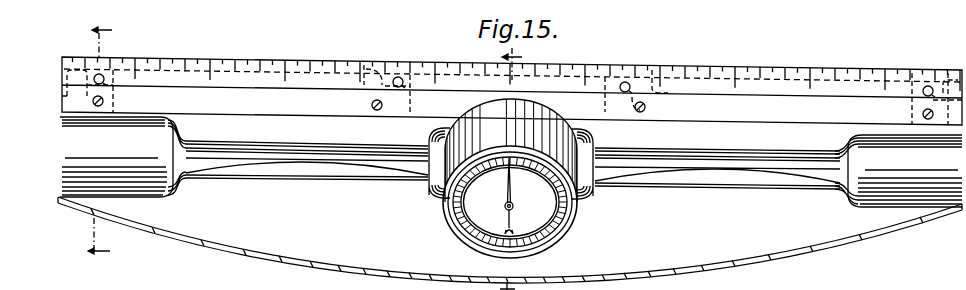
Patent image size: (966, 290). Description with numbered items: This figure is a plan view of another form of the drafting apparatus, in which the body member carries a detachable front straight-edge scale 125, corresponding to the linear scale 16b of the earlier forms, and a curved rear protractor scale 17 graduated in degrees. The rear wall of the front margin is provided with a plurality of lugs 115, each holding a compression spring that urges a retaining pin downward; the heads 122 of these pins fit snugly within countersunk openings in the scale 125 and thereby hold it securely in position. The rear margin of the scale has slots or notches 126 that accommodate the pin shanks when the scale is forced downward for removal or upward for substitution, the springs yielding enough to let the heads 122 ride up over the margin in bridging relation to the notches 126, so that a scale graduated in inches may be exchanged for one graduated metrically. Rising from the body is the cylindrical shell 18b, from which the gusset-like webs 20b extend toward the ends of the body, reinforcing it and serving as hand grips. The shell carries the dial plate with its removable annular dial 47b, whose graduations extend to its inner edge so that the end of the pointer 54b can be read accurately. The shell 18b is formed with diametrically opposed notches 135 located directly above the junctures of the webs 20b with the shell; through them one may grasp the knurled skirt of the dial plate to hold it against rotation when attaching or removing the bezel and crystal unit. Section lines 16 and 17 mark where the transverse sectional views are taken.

The scale 16 is at (520, 169).
The scale 17 is at (99, 141).
The lugs 115 is at (62, 99).
The heads of the retaining pins 122 is at (103, 75).
The detachable scale 125 is at (802, 88).
The slots or notches 126 is at (400, 90).
The notches 135 is at (445, 200).
The cylindrical shell 18b is at (592, 142).
The gusset-like webs 20b is at (363, 168).
The dial 47b is at (565, 230).
The pointer 54b is at (512, 203).
The scale 16b is at (727, 240).